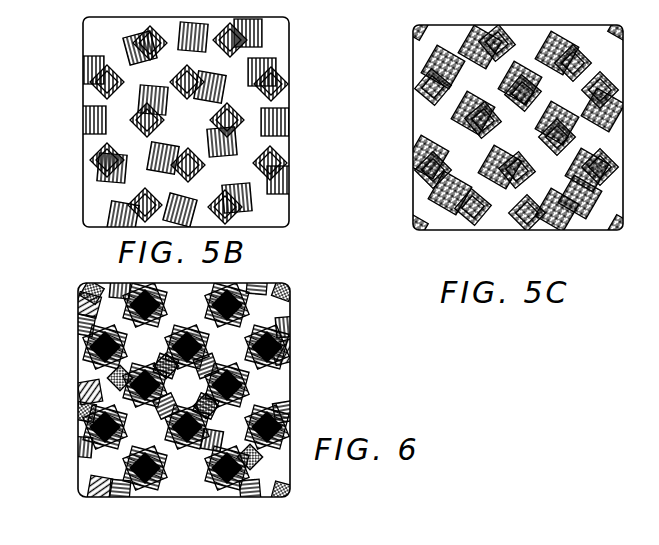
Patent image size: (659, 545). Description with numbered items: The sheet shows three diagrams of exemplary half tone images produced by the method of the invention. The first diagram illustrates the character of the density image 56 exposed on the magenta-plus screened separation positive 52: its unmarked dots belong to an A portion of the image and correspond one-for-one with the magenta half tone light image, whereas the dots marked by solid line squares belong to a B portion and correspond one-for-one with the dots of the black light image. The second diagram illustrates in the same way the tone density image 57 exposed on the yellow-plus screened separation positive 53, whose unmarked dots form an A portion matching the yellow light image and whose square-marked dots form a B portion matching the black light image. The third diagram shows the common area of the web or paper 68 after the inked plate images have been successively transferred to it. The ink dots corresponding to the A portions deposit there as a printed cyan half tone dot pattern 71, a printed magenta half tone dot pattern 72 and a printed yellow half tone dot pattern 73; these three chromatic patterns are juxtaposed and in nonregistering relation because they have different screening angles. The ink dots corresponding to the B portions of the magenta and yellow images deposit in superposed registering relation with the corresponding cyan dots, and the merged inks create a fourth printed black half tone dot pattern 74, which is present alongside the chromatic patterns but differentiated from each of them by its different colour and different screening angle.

In FIG. 5B, the magenta-plus screened separation positive 52 is at (84, 208).
In FIG. 5C, the yellow-plus screened separation positive 53 is at (560, 232).
In FIG. 5B, the density image 56 is at (198, 135).
In FIG. 5C, the tone density image 57 is at (529, 137).
In FIG. 6, the paper 68 is at (80, 470).
In FIG. 6, the printed cyan half tone dot pattern 71 is at (120, 284).
In FIG. 6, the printed magenta half tone dot pattern 72 is at (83, 325).
In FIG. 6, the printed yellow half tone dot pattern 73 is at (100, 290).
In FIG. 6, the printed black half tone dot pattern 74 is at (83, 303).